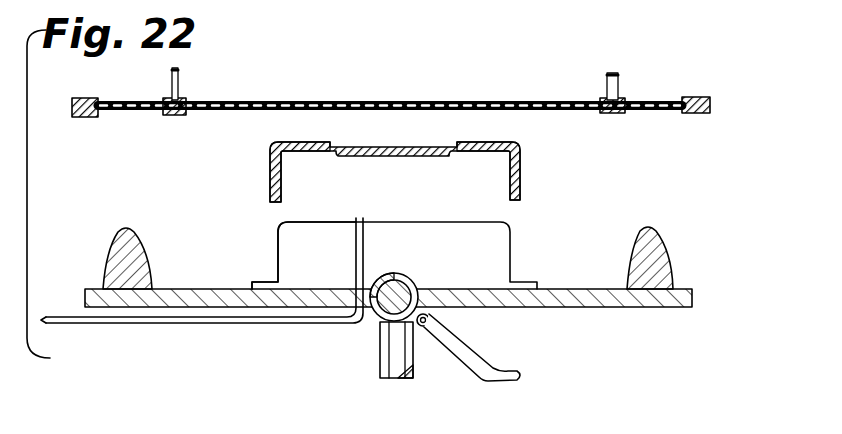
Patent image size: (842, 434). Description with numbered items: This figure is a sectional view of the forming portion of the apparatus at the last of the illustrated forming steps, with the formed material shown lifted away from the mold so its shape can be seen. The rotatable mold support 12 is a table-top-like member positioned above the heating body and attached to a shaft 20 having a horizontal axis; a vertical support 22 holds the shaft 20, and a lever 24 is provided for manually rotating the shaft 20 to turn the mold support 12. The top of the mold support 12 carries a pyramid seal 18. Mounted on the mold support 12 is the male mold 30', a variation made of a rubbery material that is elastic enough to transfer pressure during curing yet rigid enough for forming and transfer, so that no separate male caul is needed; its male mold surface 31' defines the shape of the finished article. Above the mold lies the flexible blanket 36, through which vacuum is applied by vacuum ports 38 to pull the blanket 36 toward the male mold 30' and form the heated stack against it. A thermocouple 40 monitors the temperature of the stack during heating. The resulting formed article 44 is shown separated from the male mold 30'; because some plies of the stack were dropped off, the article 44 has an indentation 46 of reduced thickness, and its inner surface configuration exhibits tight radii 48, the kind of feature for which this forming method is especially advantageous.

The mold support 12 is at (592, 307).
The pyramid seal 18 is at (672, 258).
The shaft 20 is at (372, 324).
The vertical support 22 is at (378, 361).
The lever 24 is at (480, 368).
The male mold 30' is at (391, 254).
The male mold surface 31' is at (284, 254).
The flexible blanket 36 is at (465, 102).
The vacuum port 38 is at (609, 113).
The thermocouple 40 is at (364, 219).
The formed article 44 is at (347, 159).
The indentation 46 is at (410, 147).
The tight radii 48 is at (258, 168).